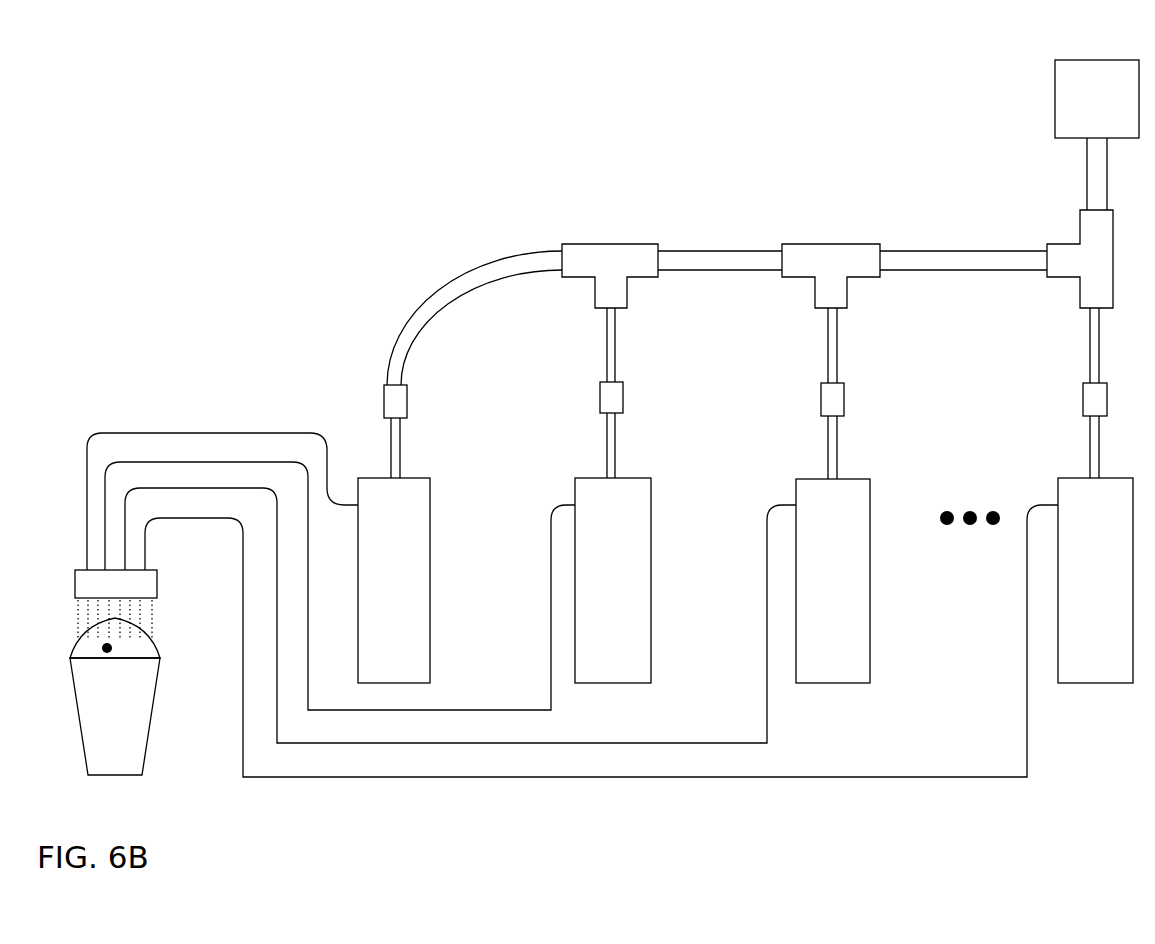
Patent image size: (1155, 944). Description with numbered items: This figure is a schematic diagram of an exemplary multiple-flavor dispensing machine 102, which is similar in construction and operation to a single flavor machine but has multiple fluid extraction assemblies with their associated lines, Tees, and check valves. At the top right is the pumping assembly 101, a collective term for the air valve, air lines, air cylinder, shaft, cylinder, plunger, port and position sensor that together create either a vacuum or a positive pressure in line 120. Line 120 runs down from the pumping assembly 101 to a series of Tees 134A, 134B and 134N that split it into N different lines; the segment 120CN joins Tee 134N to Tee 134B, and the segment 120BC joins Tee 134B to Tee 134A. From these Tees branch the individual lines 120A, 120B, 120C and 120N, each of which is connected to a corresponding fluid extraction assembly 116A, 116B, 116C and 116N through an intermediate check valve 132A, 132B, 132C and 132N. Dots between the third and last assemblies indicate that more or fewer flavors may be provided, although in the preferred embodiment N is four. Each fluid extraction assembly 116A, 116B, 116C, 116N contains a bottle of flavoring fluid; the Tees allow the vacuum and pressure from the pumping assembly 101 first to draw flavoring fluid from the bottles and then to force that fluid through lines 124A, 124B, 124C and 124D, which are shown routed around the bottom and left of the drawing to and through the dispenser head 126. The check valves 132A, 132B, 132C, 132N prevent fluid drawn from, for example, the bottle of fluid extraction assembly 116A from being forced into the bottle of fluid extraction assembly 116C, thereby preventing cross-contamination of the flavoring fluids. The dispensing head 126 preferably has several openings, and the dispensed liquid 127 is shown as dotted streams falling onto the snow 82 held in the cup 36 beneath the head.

The multiple-flavor dispensing machine 102 is at (400, 180).
The pumping assembly 101 is at (1082, 111).
The line 120 is at (1078, 183).
The Tee 134N is at (1075, 233).
The line segment 120CN is at (953, 238).
The Tee 134B is at (840, 239).
The line segment 120BC is at (710, 238).
The Tee 134A is at (615, 240).
The line 120A is at (420, 294).
The check valve 132A is at (380, 395).
The fluid extraction assembly 116A is at (369, 600).
The line 120B is at (600, 338).
The check valve 132B is at (595, 390).
The fluid extraction assembly 116B is at (588, 600).
The line 120C is at (820, 332).
The check valve 132C is at (818, 393).
The fluid extraction assembly 116C is at (808, 600).
The line 120N is at (1080, 337).
The check valve 132N is at (1080, 393).
The fluid extraction assembly 116N is at (1070, 600).
The line 124A is at (178, 425).
The line 124B is at (545, 600).
The line 124C is at (758, 598).
The line 124D is at (1020, 603).
The dispensing head 126 is at (99, 597).
The dispensed liquid 127 is at (157, 615).
The cup 36 is at (126, 760).
The snow 82 is at (111, 647).